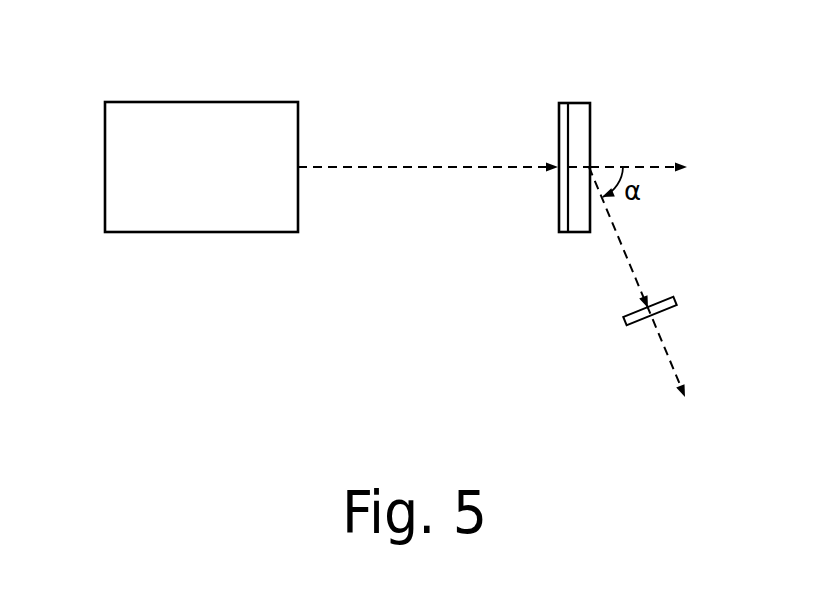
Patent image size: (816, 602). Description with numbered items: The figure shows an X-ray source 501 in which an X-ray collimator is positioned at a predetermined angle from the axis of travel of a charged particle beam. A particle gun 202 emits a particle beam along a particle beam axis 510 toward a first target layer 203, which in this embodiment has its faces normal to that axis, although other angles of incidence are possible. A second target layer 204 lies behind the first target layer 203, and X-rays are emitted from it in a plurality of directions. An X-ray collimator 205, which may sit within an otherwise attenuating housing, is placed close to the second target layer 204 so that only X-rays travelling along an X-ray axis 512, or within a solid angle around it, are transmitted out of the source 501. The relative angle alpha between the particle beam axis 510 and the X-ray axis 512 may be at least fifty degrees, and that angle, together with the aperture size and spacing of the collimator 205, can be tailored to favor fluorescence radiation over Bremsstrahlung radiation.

The particle gun 202 is at (157, 128).
The first target layer 203 is at (563, 110).
The second target layer 204 is at (578, 112).
The X-ray collimator 205 is at (663, 308).
The X-ray source 501 is at (160, 354).
The particle beam axis 510 is at (452, 168).
The X-ray axis 512 is at (635, 265).